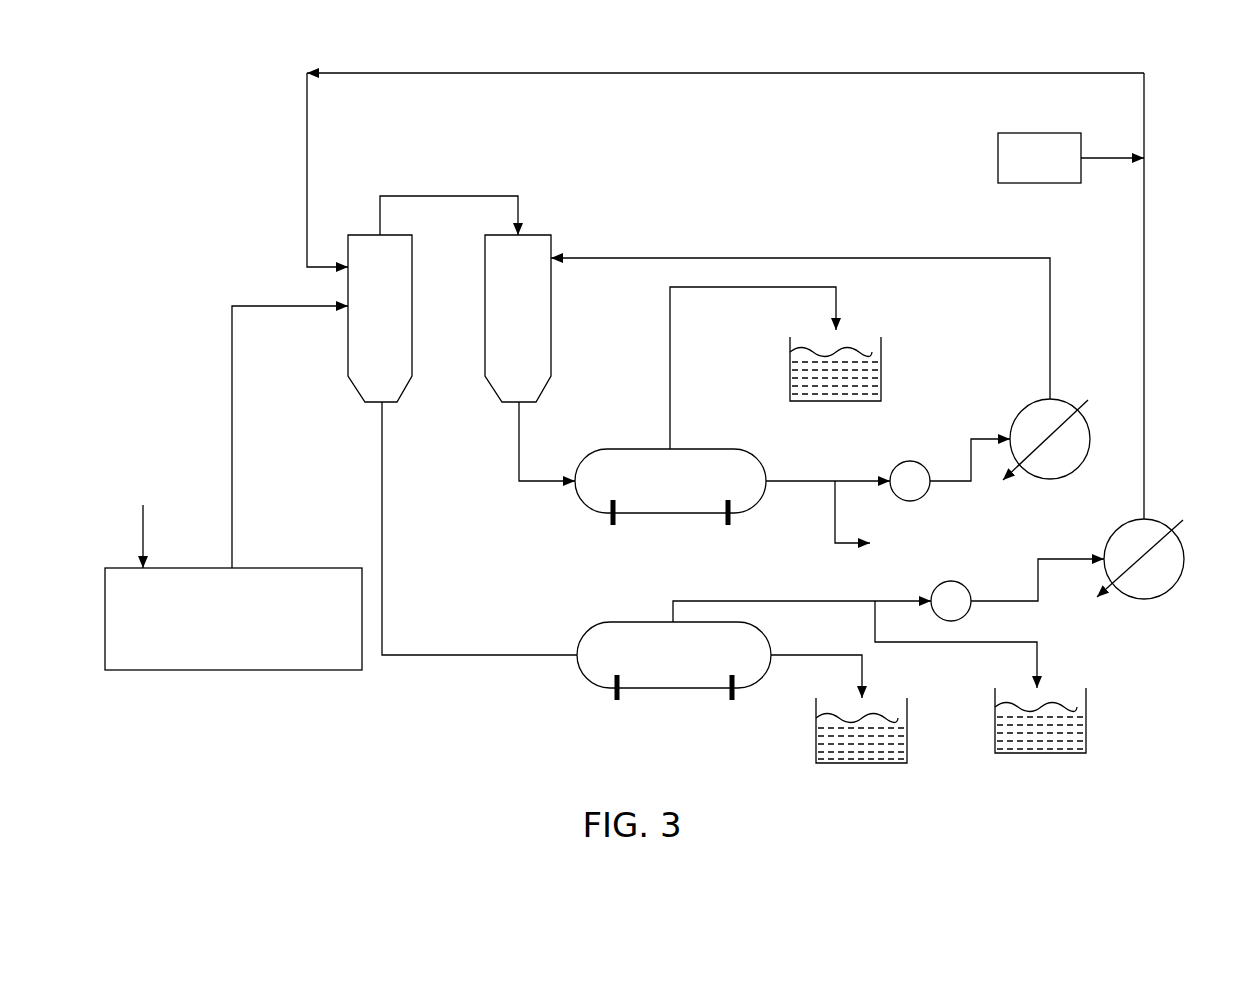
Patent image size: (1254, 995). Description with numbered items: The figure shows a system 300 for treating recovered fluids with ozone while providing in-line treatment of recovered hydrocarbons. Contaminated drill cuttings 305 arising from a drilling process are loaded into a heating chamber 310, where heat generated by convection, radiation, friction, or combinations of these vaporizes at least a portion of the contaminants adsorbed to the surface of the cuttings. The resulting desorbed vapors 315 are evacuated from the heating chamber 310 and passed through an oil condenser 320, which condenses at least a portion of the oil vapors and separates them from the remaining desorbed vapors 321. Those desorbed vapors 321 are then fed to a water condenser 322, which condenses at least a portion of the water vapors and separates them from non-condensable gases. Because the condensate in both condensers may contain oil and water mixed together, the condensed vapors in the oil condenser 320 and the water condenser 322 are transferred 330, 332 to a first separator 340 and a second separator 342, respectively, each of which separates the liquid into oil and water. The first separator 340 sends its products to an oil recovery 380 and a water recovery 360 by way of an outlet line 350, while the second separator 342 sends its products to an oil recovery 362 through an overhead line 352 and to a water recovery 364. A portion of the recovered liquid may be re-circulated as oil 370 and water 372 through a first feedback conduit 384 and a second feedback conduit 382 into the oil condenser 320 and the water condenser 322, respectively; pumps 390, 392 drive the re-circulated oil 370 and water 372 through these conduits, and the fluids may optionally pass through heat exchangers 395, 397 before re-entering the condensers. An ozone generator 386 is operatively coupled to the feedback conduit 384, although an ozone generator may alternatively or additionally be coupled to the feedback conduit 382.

The system 300 is at (247, 146).
The contaminated drill cuttings 305 is at (155, 524).
The heating chamber 310 is at (233, 619).
The desorbed vapors 315 is at (232, 345).
The oil condenser 320 is at (414, 305).
The remaining desorbed vapors 321 is at (424, 196).
The water condenser 322 is at (553, 311).
The transfer of condensed vapors from oil condenser 330 is at (382, 510).
The transfer of condensed vapors from water condenser 332 is at (519, 440).
The first separator 340 is at (674, 661).
The second separator 342 is at (670, 487).
The first separator outlet line 350 is at (800, 655).
The second separator overhead line 352 is at (670, 358).
The water recovery 360 is at (909, 722).
The oil recovery 362 is at (883, 362).
The water recovery 364 is at (872, 518).
The re-circulated oil 370 is at (880, 599).
The re-circulated water 372 is at (818, 477).
The oil recovery 380 is at (1088, 712).
The second feedback conduit 382 is at (808, 258).
The first feedback conduit 384 is at (877, 65).
The ozone generator 386 is at (1071, 296).
The pump 390 is at (966, 580).
The pump 392 is at (913, 456).
The heat exchanger 395 is at (1160, 526).
The heat exchanger 397 is at (1063, 404).